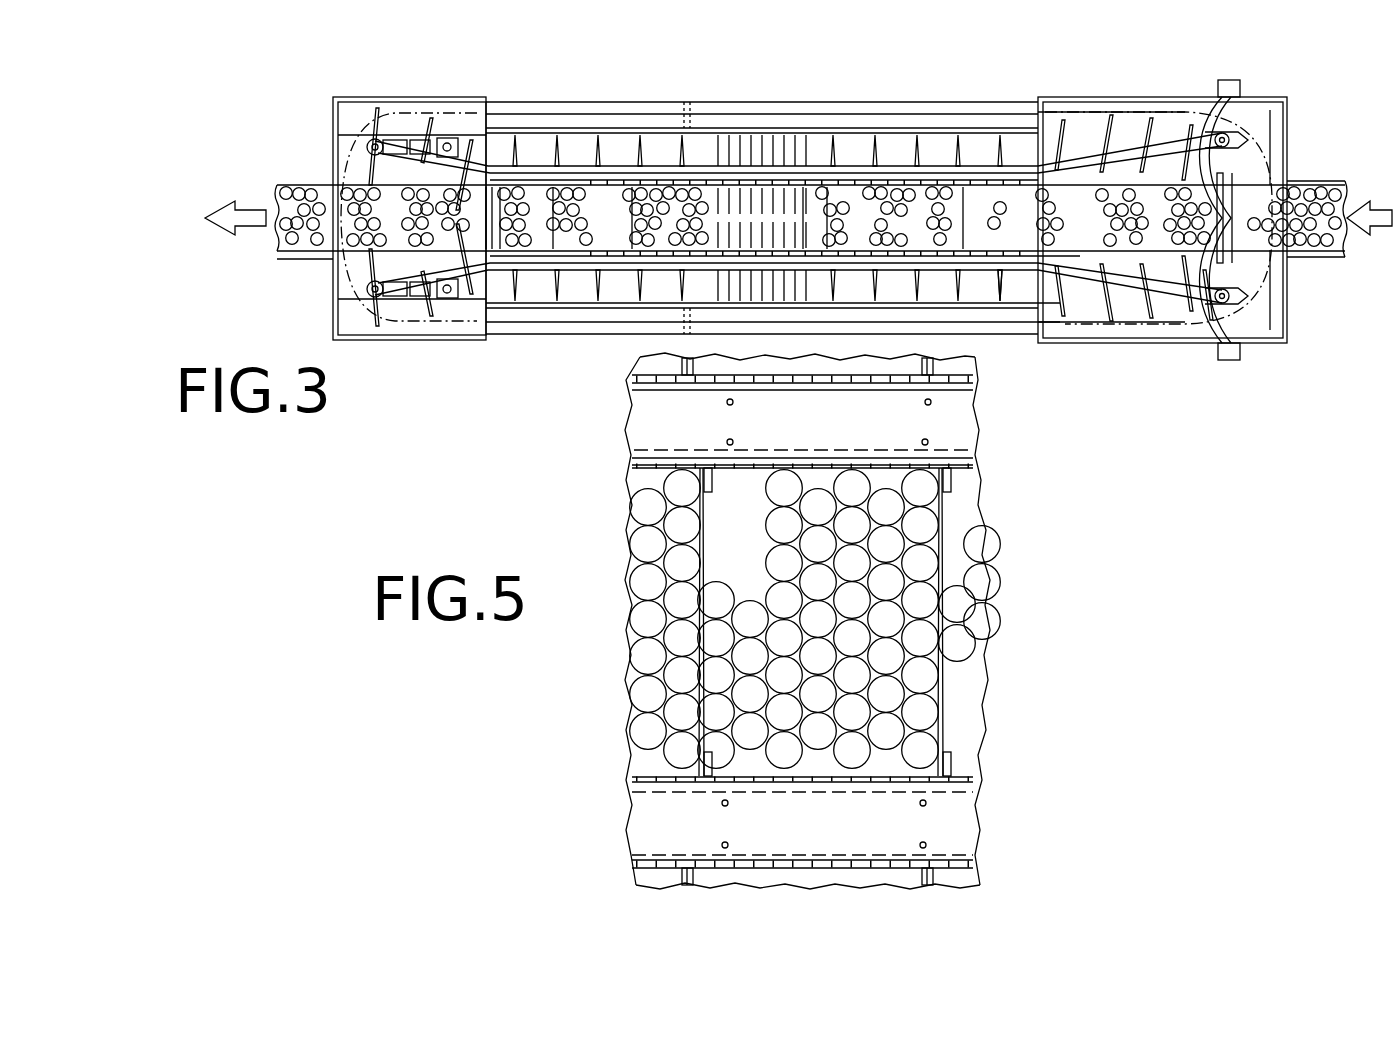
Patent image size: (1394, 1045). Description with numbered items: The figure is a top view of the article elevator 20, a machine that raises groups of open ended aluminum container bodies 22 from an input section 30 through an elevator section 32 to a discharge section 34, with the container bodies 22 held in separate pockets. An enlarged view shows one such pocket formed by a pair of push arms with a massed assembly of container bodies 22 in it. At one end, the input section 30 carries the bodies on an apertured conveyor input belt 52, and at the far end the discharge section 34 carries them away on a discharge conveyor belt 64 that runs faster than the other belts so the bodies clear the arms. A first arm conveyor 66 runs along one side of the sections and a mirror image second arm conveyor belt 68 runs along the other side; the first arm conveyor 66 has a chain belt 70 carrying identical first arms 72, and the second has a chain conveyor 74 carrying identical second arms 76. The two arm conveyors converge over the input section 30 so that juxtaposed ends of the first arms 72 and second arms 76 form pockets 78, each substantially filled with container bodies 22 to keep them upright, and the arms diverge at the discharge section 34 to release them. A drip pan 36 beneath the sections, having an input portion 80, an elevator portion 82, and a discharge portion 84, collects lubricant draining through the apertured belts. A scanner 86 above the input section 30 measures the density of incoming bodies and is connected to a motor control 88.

In FIG. 3, the article elevator 20 is at (445, 92).
In FIG. 3, the container bodies 22 is at (1300, 240).
In FIG. 5, the container bodies 22 is at (920, 610).
In FIG. 3, the input section 30 is at (1120, 346).
In FIG. 3, the elevator section 32 is at (768, 154).
In FIG. 3, the discharge section 34 is at (445, 318).
In FIG. 3, the drip pan 36 is at (602, 122).
In FIG. 3, the conveyor input belt 52 is at (1210, 195).
In FIG. 3, the discharge conveyor belt 64 is at (465, 245).
In FIG. 3, the first arm conveyor 66 is at (1022, 283).
In FIG. 5, the first arm conveyor 66 is at (900, 832).
In FIG. 3, the second arm conveyor belt 68 is at (935, 170).
In FIG. 5, the second arm conveyor belt 68 is at (650, 415).
In FIG. 3, the chain belt 70 is at (1078, 266).
In FIG. 5, the chain belt 70 is at (915, 785).
In FIG. 3, the first arms 72 is at (985, 275).
In FIG. 5, the first arms 72 is at (945, 705).
In FIG. 3, the chain conveyor 74 is at (990, 172).
In FIG. 5, the chain conveyor 74 is at (925, 458).
In FIG. 3, the second arms 76 is at (870, 160).
In FIG. 5, the second arms 76 is at (940, 522).
In FIG. 3, the pockets 78 is at (645, 185).
In FIG. 5, the pockets 78 is at (740, 745).
In FIG. 3, the input portion 80 is at (1068, 138).
In FIG. 3, the elevator portion 82 is at (700, 150).
In FIG. 3, the discharge portion 84 is at (487, 147).
In FIG. 3, the scanner 86 is at (1180, 296).
In FIG. 3, the motor control 88 is at (1232, 86).